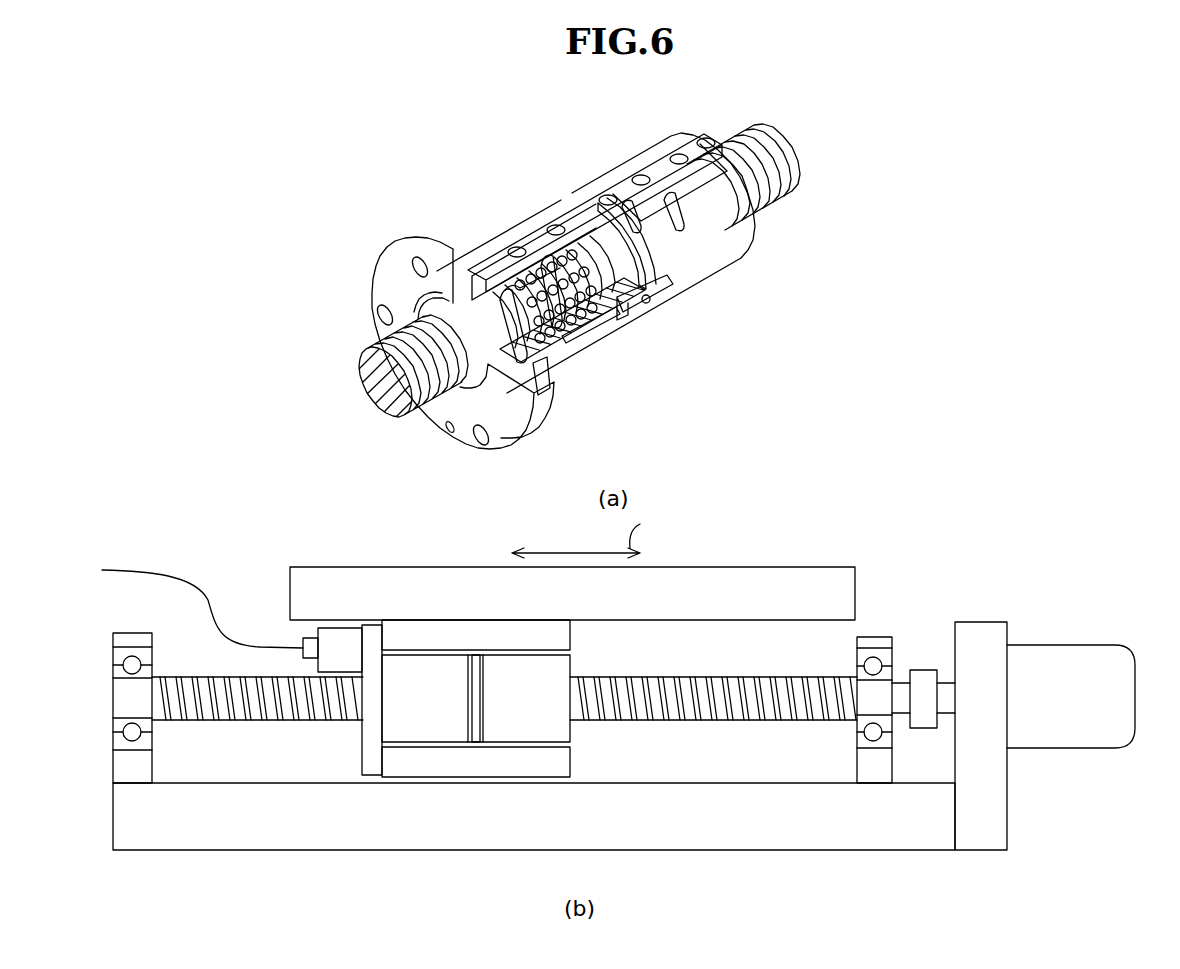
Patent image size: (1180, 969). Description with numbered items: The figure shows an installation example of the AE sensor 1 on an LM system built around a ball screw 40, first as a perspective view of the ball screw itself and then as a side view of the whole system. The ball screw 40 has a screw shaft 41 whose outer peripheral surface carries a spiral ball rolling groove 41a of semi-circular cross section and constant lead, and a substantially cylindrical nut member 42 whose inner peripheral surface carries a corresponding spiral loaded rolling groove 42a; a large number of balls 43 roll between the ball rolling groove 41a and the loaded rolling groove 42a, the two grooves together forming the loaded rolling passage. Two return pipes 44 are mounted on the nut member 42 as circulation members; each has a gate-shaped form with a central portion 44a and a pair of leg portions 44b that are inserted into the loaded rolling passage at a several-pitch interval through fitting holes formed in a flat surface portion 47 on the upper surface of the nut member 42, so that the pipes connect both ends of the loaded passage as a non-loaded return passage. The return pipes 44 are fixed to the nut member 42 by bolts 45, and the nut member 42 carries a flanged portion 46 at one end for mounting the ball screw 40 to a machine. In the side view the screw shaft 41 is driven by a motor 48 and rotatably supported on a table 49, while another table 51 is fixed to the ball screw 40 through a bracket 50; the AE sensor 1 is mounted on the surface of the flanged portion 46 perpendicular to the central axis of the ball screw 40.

The AE sensor 1 is at (318, 666).
The ball screw 40 is at (736, 339).
The screw shaft 41 is at (770, 146).
The ball rolling groove 41a is at (776, 200).
The nut member 42 is at (740, 262).
The loaded rolling groove 42a is at (548, 365).
The balls 43 is at (520, 245).
The return pipes 44 is at (542, 253).
The central portion 44a is at (522, 262).
The leg portions 44b is at (673, 197).
The bolts 45 is at (522, 250).
The flanged portion 46 is at (433, 246).
The flat surface portion 47 is at (625, 183).
The motor 48 is at (1085, 652).
The table 49 is at (898, 842).
The bracket 50 is at (570, 641).
The table 51 is at (852, 588).